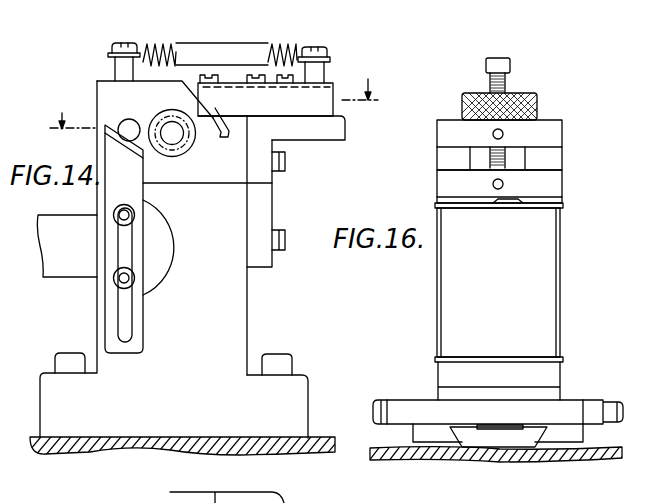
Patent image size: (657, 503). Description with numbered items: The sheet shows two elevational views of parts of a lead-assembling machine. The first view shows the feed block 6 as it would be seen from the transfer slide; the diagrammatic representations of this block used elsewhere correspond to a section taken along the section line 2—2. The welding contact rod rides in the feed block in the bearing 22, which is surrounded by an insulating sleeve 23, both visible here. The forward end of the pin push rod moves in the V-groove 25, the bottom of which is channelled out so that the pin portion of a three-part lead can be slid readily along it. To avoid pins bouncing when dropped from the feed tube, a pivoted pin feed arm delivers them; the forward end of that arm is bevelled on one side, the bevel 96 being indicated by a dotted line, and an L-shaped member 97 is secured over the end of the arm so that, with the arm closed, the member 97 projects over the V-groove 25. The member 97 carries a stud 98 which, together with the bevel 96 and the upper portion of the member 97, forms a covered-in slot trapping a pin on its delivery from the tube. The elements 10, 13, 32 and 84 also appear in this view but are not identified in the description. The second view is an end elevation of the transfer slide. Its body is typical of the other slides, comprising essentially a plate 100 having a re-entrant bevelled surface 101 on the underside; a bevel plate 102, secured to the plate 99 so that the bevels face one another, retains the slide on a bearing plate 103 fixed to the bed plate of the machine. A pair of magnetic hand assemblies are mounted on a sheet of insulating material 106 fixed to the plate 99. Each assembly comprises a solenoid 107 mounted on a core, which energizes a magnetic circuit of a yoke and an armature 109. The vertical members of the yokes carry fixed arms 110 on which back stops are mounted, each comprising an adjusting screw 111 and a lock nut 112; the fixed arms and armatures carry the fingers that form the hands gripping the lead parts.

In FIG. 14, the section line 2 is at (214, 95).
In FIG. 14, the feed block 6 is at (243, 153).
In FIG. 14, the pivot pin 10 is at (130, 124).
In FIG. 14, the slotted bar 13 is at (136, 161).
In FIG. 14, the bearing 22 is at (178, 138).
In FIG. 14, the insulating sleeve 23 is at (170, 111).
In FIG. 14, the V-groove 25 is at (228, 129).
In FIG. 14, the arm 32 is at (336, 116).
In FIG. 14, the cam 84 is at (156, 244).
In FIG. 14, the bevel 96 is at (203, 98).
In FIG. 14, the L-shaped member 97 is at (316, 99).
In FIG. 14, the stud 98 is at (226, 122).
In FIG. 14, the plate 99 is at (188, 51).
In FIG. 16, the plate 100 is at (572, 415).
In FIG. 16, the re-entrant bevelled surface 101 is at (538, 432).
In FIG. 16, the bevel plate 102 is at (426, 433).
In FIG. 16, the bearing plate 103 is at (483, 435).
In FIG. 16, the sheet of insulating material 106 is at (550, 397).
In FIG. 16, the solenoid 107 is at (528, 255).
In FIG. 16, the armature 109 is at (544, 187).
In FIG. 16, the fixed arm 110 is at (540, 130).
In FIG. 16, the adjusting screw 111 is at (511, 69).
In FIG. 16, the lock nut 112 is at (536, 100).